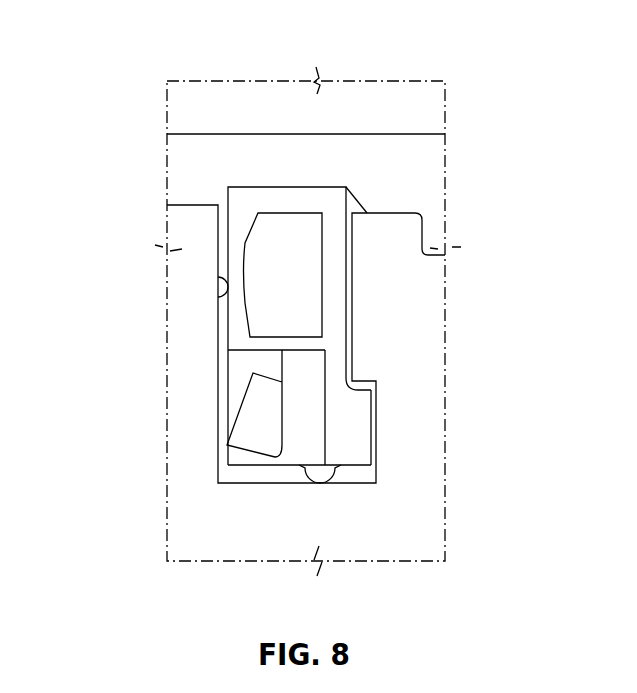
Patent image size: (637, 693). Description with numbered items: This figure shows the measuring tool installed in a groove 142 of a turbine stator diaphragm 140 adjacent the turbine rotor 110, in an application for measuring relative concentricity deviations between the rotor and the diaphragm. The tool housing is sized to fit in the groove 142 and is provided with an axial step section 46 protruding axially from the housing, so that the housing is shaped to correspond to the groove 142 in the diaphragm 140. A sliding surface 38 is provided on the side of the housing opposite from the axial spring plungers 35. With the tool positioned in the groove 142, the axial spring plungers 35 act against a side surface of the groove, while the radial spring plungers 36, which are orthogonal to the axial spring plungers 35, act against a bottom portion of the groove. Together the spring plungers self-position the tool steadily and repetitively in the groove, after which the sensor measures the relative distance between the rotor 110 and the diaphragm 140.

The rotor 110 is at (247, 122).
The stator diaphragm 140 is at (415, 500).
The groove 142 is at (233, 476).
The sliding surface 38 is at (323, 213).
The axial step section 46 is at (338, 413).
The axial spring plungers 35 is at (218, 290).
The radial spring plungers 36 is at (318, 472).